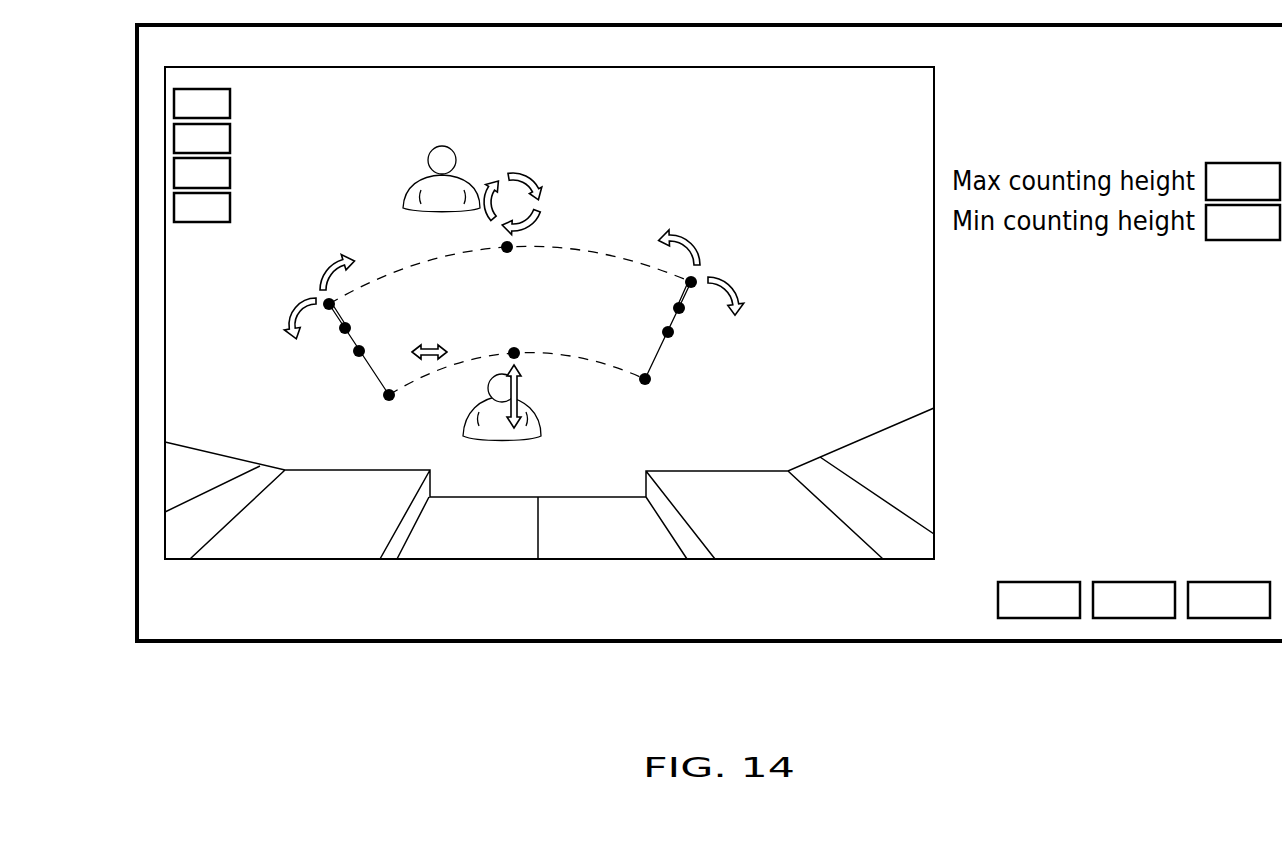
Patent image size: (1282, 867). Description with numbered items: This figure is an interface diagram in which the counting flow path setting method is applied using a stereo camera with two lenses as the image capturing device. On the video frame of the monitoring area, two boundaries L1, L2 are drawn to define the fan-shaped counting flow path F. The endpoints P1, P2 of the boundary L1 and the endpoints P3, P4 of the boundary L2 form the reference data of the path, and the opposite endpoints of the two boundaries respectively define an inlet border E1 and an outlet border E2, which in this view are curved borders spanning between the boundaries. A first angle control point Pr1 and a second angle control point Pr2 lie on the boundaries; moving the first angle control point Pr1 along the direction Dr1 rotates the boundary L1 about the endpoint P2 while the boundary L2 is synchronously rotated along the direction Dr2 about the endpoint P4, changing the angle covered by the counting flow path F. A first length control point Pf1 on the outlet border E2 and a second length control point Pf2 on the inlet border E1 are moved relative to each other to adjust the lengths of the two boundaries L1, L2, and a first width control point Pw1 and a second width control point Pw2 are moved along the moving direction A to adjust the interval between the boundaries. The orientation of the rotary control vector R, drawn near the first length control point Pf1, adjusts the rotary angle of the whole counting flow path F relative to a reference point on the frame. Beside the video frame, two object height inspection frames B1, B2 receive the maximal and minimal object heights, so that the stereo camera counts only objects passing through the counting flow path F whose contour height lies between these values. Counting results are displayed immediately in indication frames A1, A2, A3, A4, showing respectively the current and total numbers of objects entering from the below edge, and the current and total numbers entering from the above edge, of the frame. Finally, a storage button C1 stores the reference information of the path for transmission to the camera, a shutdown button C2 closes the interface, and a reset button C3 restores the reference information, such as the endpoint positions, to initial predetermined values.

The indication frame A1 is at (202, 103).
The indication frame A2 is at (202, 138).
The indication frame A3 is at (202, 173).
The indication frame A4 is at (202, 207).
The object height inspection frame B1 is at (1243, 181).
The object height inspection frame B2 is at (1243, 222).
The storage button C1 is at (1039, 600).
The shutdown button C2 is at (1134, 600).
The reset button C3 is at (1229, 600).
The inlet border E1 is at (604, 364).
The outlet border E2 is at (606, 251).
The counting flow path F is at (589, 303).
The boundary L1 is at (359, 350).
The boundary L2 is at (668, 331).
The endpoint P1 is at (319, 318).
The endpoint P2 is at (394, 411).
The endpoint P3 is at (705, 296).
The endpoint P4 is at (646, 395).
The first angle control point Pr1 is at (364, 323).
The second angle control point Pr2 is at (657, 300).
The first width control point Pw1 is at (335, 355).
The second width control point Pw2 is at (642, 333).
The first length control point Pf1 is at (507, 265).
The second length control point Pf2 is at (513, 338).
The moving direction A is at (429, 337).
The rotary control vector R is at (513, 204).
The direction Dr1 is at (480, 273).
The direction Dr2 is at (538, 271).